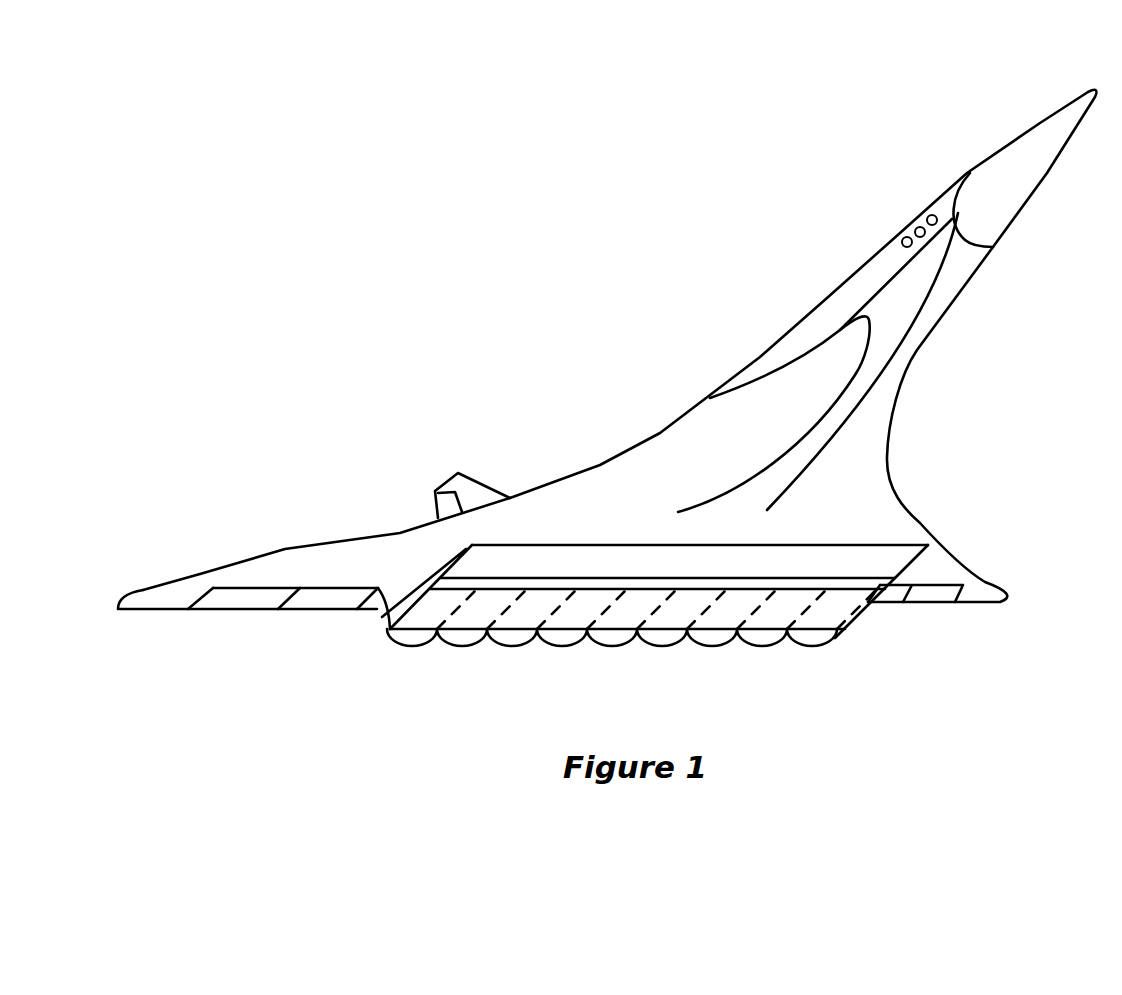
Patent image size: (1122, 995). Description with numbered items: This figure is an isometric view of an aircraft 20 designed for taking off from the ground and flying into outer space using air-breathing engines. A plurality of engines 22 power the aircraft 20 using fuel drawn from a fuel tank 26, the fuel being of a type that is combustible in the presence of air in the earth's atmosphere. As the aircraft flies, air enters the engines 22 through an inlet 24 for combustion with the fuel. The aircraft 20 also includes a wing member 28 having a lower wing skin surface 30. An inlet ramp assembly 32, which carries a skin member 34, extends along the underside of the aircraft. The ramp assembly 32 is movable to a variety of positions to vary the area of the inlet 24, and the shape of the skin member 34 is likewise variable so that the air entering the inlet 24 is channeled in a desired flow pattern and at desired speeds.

The aircraft 20 is at (938, 160).
The engines 22 is at (447, 645).
The inlet 24 is at (813, 585).
The fuel tank 26 is at (830, 297).
The wing member 28 is at (282, 535).
The lower wing skin surface 30 is at (685, 458).
The inlet ramp assembly 32 is at (887, 550).
The skin member 34 is at (626, 553).